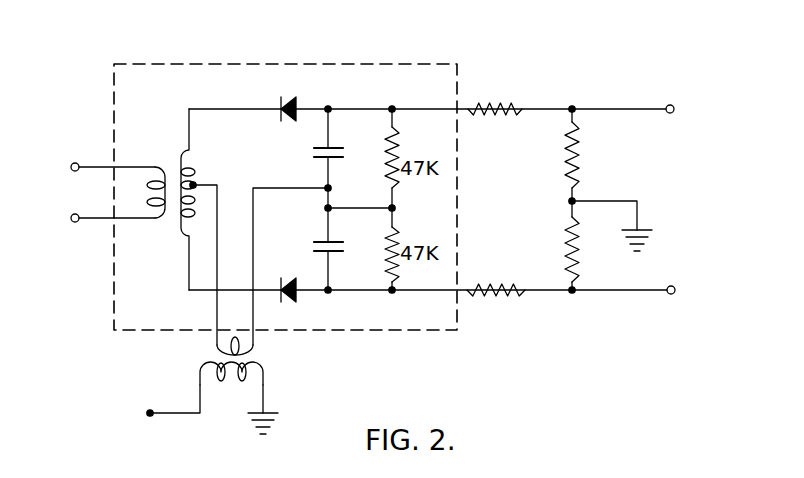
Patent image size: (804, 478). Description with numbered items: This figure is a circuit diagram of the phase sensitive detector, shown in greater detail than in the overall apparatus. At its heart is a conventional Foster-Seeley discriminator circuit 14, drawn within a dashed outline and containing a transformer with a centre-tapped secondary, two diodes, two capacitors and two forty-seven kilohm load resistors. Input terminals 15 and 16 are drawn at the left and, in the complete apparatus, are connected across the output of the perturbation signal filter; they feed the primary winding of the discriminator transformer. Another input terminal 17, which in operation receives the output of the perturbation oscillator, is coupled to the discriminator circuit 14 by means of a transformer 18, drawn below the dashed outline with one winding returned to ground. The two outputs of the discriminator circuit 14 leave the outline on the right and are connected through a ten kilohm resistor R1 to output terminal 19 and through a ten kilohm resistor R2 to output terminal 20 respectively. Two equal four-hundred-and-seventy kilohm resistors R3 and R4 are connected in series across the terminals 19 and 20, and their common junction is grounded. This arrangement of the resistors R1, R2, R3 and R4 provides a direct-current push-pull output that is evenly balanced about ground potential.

The Foster-Seeley discriminator circuit 14 is at (352, 64).
The input terminal 15 is at (71, 164).
The input terminal 16 is at (70, 222).
The input terminal 17 is at (150, 413).
The transformer 18 is at (230, 358).
The output terminal 19 is at (674, 109).
The output terminal 20 is at (675, 292).
The resistor R1 is at (480, 105).
The resistor R2 is at (498, 283).
The resistor R3 is at (565, 159).
The resistor R4 is at (567, 236).